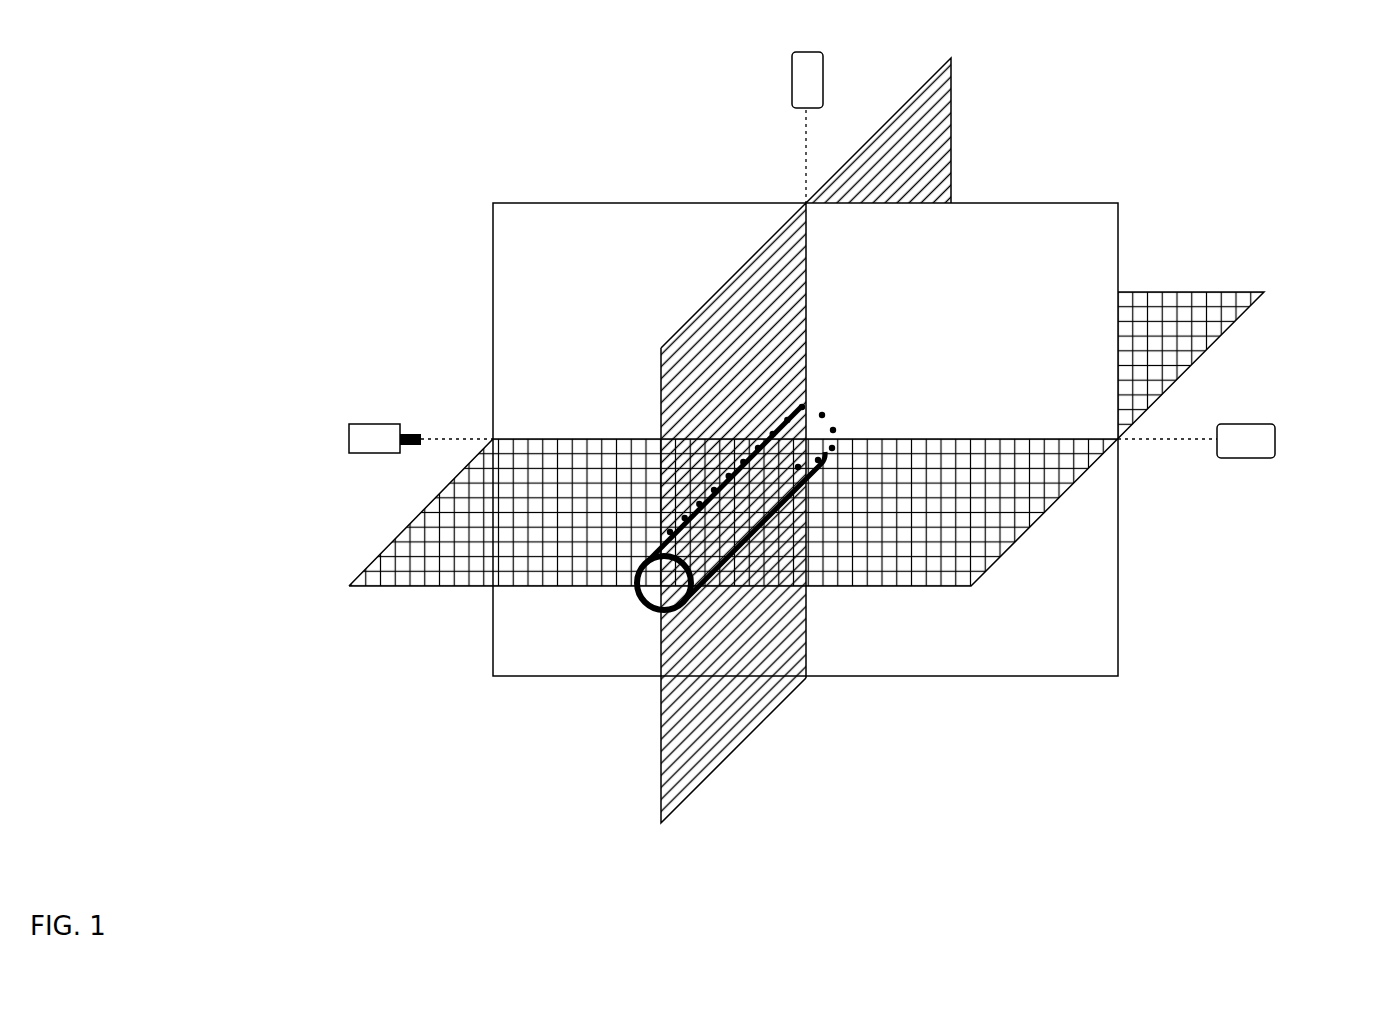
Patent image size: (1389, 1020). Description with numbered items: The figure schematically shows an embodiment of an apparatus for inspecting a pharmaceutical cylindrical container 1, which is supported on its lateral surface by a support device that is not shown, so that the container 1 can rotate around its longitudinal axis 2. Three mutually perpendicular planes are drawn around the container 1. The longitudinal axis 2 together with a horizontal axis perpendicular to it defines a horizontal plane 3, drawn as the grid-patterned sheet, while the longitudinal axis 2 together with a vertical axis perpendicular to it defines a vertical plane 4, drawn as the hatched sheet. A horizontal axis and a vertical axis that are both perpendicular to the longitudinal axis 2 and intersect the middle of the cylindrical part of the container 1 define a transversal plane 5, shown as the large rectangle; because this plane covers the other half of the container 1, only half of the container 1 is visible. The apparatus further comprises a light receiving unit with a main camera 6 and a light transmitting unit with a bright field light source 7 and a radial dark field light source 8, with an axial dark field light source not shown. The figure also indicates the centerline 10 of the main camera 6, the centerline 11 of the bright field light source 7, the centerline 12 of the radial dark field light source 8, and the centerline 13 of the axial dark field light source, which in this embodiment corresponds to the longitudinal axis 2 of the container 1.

The pharmaceutical cylindrical container 1 is at (661, 708).
The longitudinal axis 2 is at (633, 588).
The horizontal plane 3 is at (1005, 553).
The vertical plane 4 is at (662, 390).
The transversal plane 5 is at (515, 203).
The main camera 6 is at (348, 432).
The bright field light source 7 is at (1275, 441).
The radial dark field light source 8 is at (823, 72).
The centerline of the main camera 10 is at (442, 437).
The centerline of the bright field light source 11 is at (1150, 443).
The centerline of the radial dark field light source 12 is at (805, 130).
The centerline of the axial dark field light source 13 is at (639, 594).